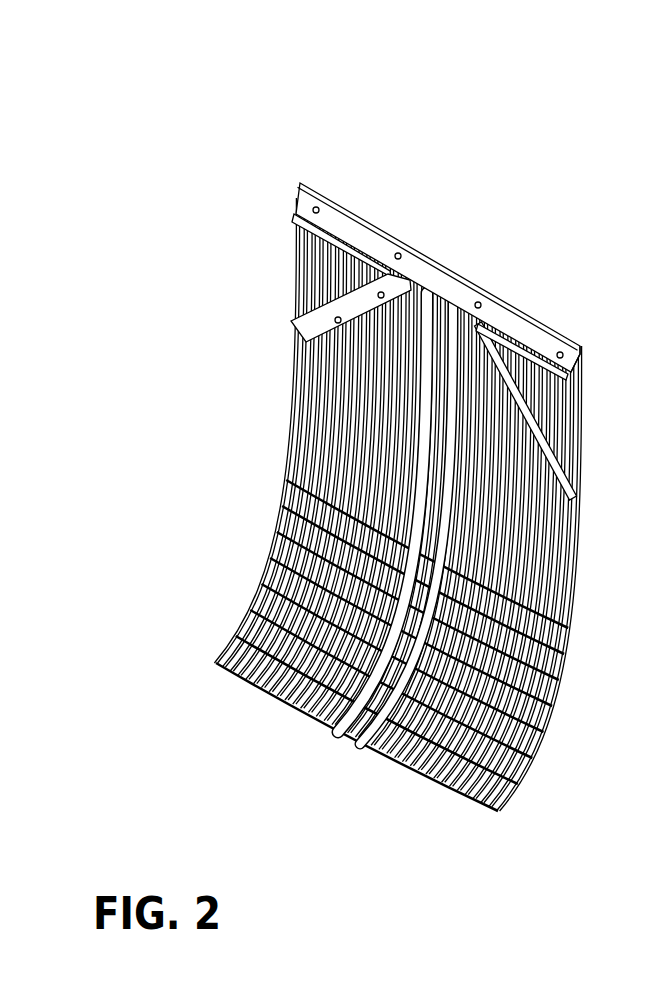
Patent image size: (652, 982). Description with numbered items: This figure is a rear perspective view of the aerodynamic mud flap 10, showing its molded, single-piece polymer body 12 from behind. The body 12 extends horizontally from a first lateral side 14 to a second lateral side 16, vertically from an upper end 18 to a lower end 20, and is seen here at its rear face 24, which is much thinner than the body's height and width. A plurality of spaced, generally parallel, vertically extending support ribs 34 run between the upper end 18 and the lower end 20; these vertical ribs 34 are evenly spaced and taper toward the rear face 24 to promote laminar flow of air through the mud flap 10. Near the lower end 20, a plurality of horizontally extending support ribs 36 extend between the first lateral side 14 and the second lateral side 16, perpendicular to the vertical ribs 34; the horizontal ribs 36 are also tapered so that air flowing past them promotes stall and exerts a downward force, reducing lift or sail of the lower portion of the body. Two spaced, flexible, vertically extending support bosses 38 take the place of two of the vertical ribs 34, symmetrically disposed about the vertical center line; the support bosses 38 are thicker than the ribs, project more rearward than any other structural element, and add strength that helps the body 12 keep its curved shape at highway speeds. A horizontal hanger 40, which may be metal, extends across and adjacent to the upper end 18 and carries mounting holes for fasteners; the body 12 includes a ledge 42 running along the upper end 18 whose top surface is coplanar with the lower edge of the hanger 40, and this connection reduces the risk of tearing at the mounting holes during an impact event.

The aerodynamic mud flap 10 is at (440, 135).
The body 12 is at (280, 432).
The first lateral side 14 is at (577, 568).
The second lateral side 16 is at (263, 533).
The upper end 18 is at (505, 340).
The lower end 20 is at (302, 707).
The rear face 24 is at (255, 583).
The vertical support ribs 34 is at (578, 433).
The horizontal support ribs 36 is at (277, 483).
The support bosses 38 is at (447, 303).
The horizontal hanger 40 is at (330, 187).
The ledge 42 is at (578, 350).